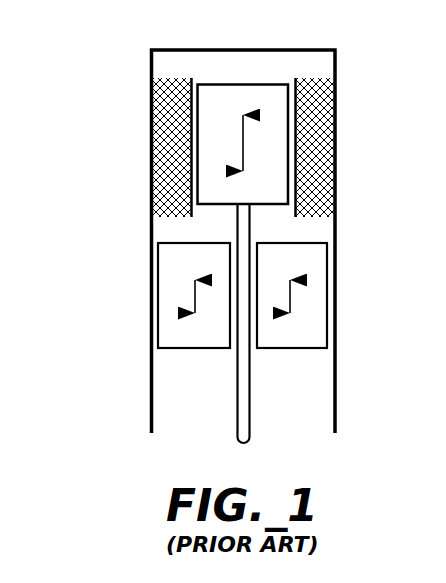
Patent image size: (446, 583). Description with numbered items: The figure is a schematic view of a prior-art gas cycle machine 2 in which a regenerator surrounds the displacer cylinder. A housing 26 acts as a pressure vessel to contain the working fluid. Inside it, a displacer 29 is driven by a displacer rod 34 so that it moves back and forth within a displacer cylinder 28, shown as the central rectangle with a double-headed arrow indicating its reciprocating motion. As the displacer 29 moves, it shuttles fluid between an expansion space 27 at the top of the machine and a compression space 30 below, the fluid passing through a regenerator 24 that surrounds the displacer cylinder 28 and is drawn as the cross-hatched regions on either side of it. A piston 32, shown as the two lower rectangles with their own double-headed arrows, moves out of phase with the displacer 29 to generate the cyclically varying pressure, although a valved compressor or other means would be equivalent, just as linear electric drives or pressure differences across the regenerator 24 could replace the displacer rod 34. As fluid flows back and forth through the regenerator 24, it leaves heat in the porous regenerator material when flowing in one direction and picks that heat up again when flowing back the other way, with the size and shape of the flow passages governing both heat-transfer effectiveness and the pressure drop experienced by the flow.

The prior art actuator assembly 2 is at (84, 171).
The regenerator 24 is at (169, 81).
The housing 26 is at (150, 62).
The expansion space 27 is at (236, 66).
The displacer cylinder 28 is at (190, 79).
The displacer 29 is at (270, 84).
The compression space 30 is at (318, 230).
The piston 32 is at (176, 348).
The displacer rod 34 is at (252, 437).